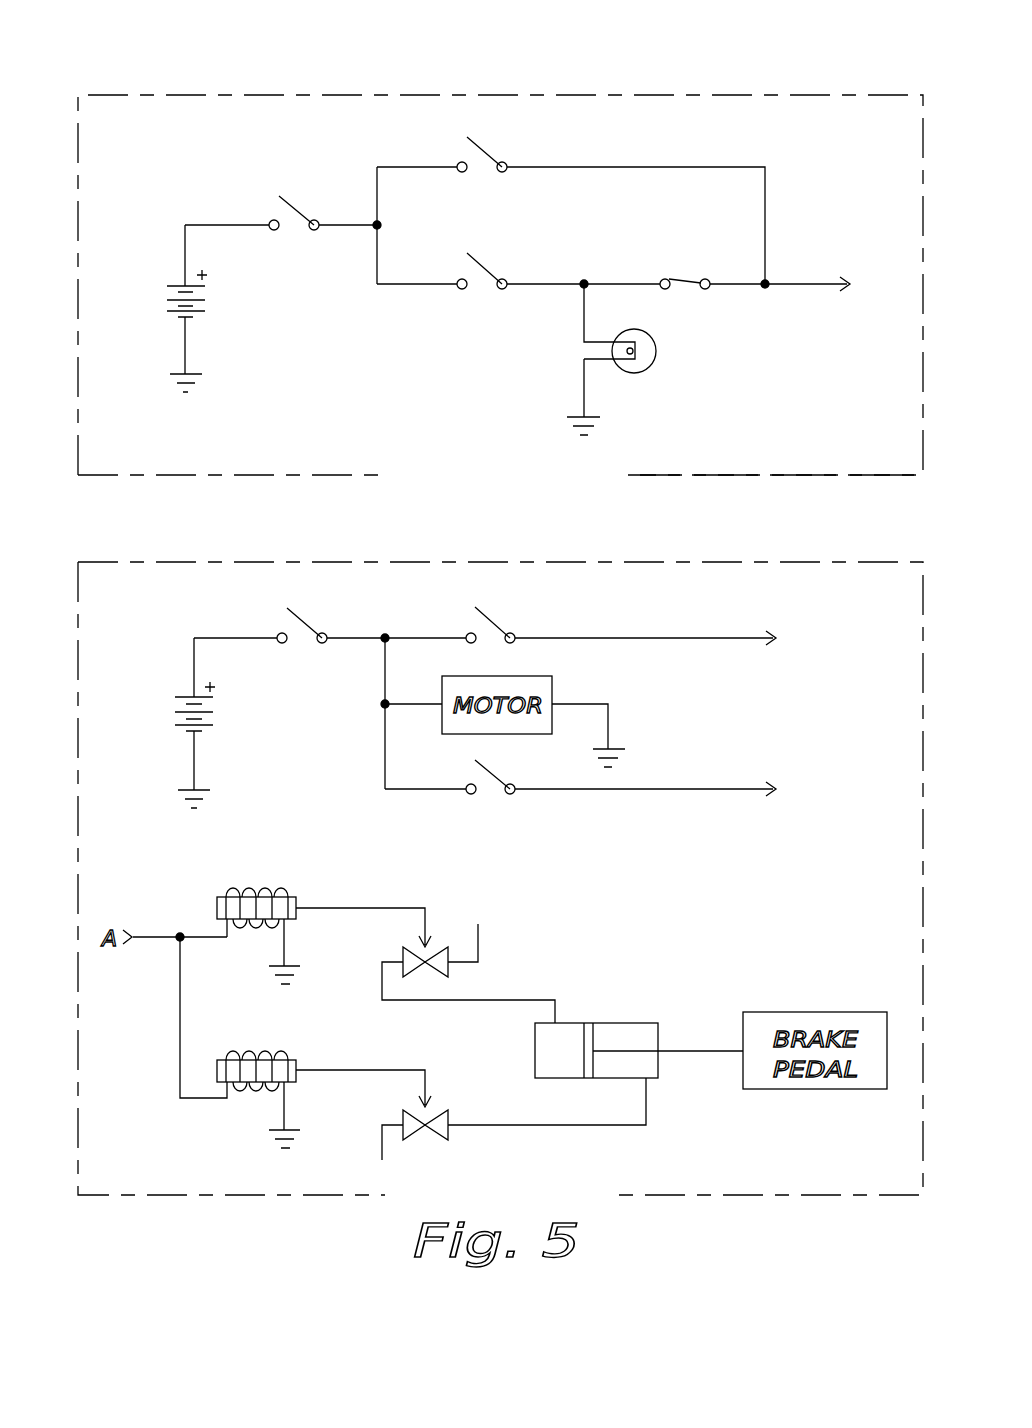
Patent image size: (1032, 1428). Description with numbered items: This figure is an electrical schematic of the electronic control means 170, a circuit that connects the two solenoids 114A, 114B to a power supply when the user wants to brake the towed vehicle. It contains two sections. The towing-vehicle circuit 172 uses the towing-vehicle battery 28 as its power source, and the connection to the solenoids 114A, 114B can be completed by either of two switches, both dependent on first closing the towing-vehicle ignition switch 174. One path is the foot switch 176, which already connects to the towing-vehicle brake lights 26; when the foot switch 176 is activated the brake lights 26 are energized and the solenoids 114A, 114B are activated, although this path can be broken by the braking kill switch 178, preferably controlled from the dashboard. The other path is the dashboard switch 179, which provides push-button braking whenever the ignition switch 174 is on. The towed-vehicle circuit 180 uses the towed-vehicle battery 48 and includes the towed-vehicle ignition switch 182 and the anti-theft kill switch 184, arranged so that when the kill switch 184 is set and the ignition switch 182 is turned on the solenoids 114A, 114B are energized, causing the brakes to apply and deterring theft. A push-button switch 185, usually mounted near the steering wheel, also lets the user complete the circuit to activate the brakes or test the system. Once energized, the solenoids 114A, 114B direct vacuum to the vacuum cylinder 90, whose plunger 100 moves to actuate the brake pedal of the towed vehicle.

The electronic control means 170 is at (720, 93).
The towing-vehicle circuit 172 is at (706, 482).
The towing-vehicle ignition switch 174 is at (317, 218).
The foot switch 176 is at (502, 278).
The braking kill switch 178 is at (705, 289).
The dashboard switch 179 is at (502, 162).
The brake lights 26 is at (652, 366).
The towing-vehicle battery 28 is at (205, 300).
The towed-vehicle circuit 180 is at (190, 555).
The towed-vehicle ignition switch 182 is at (323, 644).
The anti-theft kill switch 184 is at (510, 633).
The push-button switch 185 is at (512, 795).
The towed-vehicle battery 48 is at (214, 713).
The solenoid 114A is at (292, 897).
The solenoid 114B is at (292, 1060).
The vacuum cylinder 90 is at (635, 1023).
The plunger 100 is at (583, 1063).